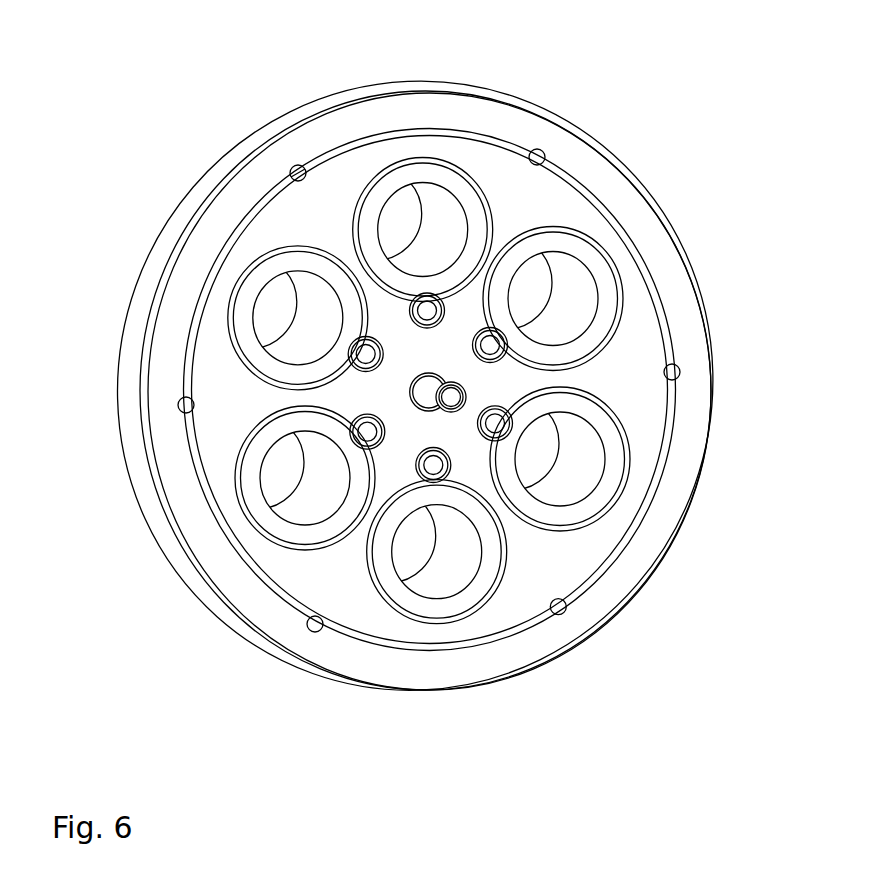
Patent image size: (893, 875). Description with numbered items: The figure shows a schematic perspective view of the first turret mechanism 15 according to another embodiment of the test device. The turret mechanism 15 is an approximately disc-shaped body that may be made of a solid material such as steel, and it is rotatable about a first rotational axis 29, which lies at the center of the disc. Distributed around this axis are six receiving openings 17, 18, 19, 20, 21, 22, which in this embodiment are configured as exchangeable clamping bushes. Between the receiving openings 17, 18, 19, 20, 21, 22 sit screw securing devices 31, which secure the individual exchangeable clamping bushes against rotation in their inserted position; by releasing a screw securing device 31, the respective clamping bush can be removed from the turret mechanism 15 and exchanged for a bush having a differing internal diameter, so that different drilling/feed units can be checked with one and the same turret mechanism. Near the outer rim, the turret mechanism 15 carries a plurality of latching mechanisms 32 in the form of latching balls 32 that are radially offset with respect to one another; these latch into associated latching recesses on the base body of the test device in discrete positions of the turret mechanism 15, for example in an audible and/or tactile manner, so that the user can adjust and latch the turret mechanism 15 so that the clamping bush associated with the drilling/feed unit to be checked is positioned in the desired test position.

The first turret mechanism 15 is at (128, 157).
The receiving opening 17 is at (453, 603).
The receiving opening 18 is at (252, 500).
The receiving opening 19 is at (245, 310).
The receiving opening 20 is at (402, 177).
The receiving opening 21 is at (588, 252).
The receiving opening 22 is at (620, 452).
The first rotational axis 29 is at (508, 418).
The screw securing device 31 is at (492, 418).
The latching mechanism 32 is at (540, 150).